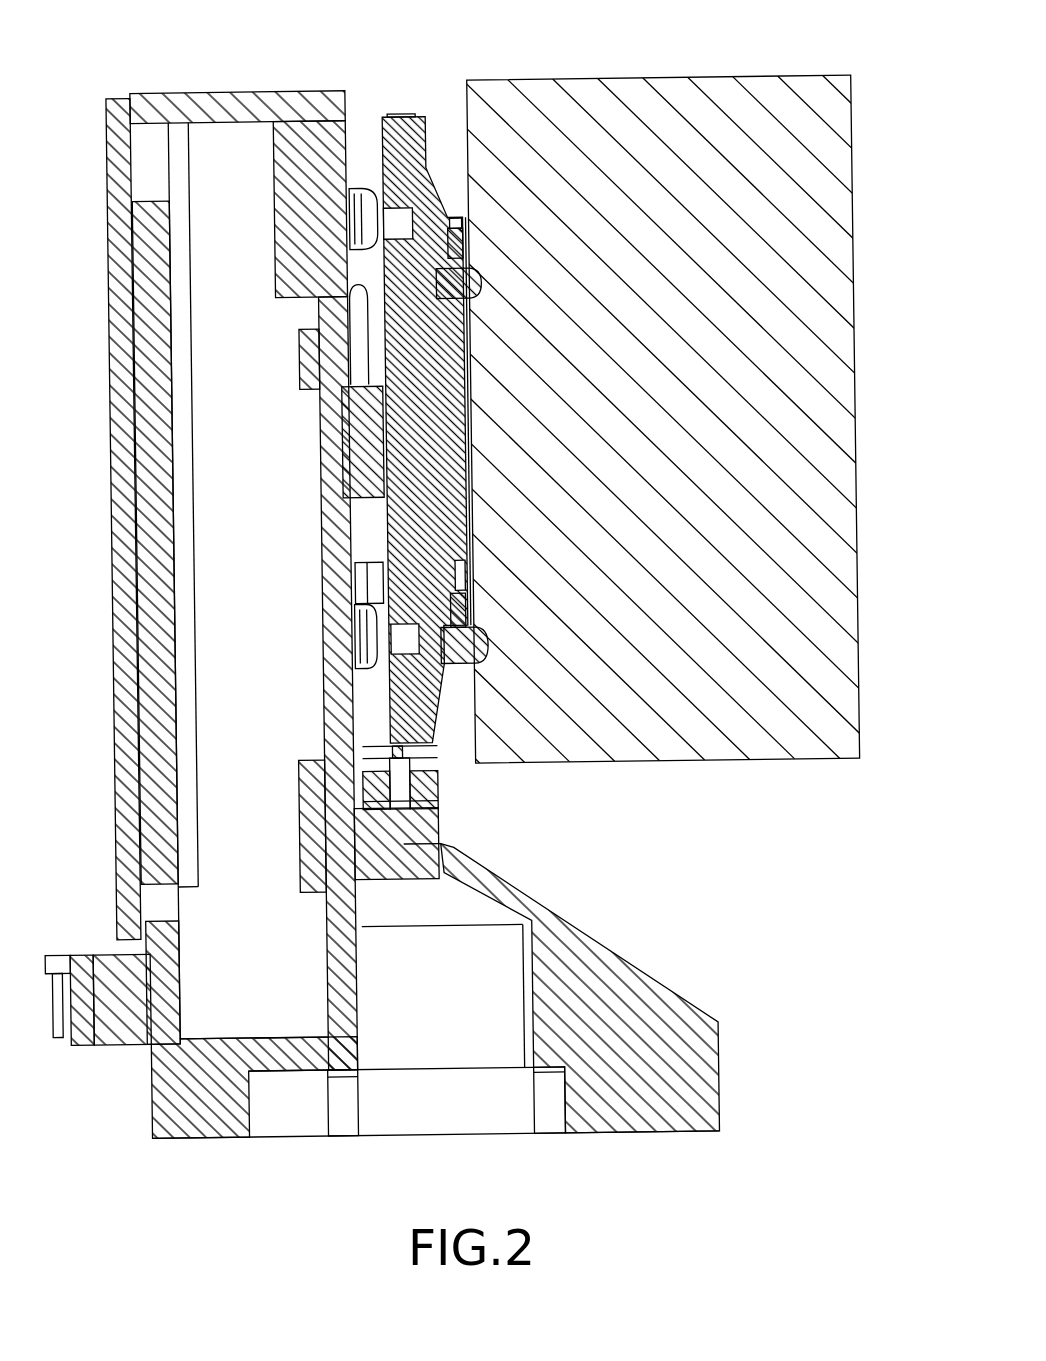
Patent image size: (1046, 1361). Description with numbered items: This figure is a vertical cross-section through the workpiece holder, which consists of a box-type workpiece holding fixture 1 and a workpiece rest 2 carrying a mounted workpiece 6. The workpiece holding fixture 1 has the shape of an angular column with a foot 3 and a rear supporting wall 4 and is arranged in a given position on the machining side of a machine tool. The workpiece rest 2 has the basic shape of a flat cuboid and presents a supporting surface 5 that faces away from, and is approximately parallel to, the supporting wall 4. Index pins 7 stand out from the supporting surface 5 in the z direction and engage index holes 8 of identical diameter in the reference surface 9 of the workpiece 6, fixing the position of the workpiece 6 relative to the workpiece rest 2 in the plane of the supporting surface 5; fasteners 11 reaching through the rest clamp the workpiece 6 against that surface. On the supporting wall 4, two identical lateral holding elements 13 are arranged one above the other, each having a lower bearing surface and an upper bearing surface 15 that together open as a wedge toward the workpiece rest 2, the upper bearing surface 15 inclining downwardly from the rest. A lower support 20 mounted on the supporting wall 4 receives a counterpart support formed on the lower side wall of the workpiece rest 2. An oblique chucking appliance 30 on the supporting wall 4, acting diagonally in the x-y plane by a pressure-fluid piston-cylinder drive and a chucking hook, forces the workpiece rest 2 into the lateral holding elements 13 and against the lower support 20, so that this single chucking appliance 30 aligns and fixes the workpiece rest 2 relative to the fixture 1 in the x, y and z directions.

The workpiece holding fixture 1 is at (225, 80).
The workpiece rest 2 is at (404, 100).
The foot 3 is at (683, 1088).
The rear supporting wall 4 is at (322, 419).
The supporting surface 5 is at (467, 348).
The workpiece 6 is at (778, 360).
The index pins 7 is at (474, 281).
The index holes 8 is at (481, 290).
The reference surface 9 is at (474, 468).
The fasteners 11 is at (382, 256).
The lateral holding elements 13 is at (372, 208).
The upper bearing surface 15 is at (414, 207).
The lower support 20 is at (427, 786).
The oblique chucking appliance 30 is at (334, 470).